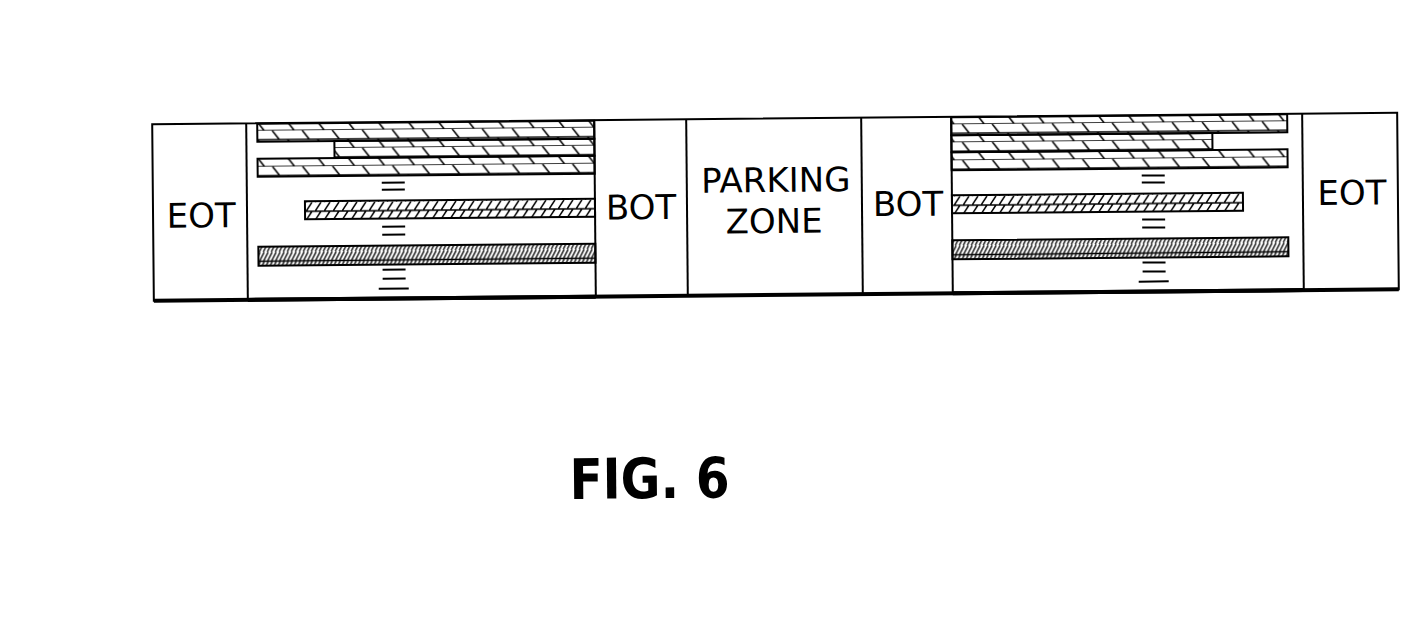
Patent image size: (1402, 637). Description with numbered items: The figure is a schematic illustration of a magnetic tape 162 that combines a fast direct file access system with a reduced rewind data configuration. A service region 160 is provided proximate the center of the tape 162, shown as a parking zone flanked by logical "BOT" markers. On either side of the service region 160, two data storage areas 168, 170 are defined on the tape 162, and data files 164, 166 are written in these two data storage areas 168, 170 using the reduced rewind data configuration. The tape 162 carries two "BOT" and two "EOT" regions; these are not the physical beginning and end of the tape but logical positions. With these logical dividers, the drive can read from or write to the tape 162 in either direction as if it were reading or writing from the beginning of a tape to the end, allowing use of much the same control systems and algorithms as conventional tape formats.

The service region 160 is at (595, 326).
The tape 162 is at (153, 297).
The data file 164 is at (387, 141).
The data file 166 is at (1125, 140).
The data storage area 168 is at (360, 299).
The data storage area 170 is at (1205, 296).